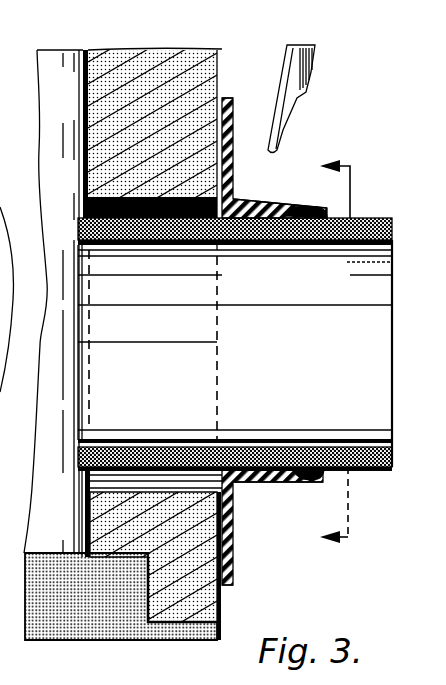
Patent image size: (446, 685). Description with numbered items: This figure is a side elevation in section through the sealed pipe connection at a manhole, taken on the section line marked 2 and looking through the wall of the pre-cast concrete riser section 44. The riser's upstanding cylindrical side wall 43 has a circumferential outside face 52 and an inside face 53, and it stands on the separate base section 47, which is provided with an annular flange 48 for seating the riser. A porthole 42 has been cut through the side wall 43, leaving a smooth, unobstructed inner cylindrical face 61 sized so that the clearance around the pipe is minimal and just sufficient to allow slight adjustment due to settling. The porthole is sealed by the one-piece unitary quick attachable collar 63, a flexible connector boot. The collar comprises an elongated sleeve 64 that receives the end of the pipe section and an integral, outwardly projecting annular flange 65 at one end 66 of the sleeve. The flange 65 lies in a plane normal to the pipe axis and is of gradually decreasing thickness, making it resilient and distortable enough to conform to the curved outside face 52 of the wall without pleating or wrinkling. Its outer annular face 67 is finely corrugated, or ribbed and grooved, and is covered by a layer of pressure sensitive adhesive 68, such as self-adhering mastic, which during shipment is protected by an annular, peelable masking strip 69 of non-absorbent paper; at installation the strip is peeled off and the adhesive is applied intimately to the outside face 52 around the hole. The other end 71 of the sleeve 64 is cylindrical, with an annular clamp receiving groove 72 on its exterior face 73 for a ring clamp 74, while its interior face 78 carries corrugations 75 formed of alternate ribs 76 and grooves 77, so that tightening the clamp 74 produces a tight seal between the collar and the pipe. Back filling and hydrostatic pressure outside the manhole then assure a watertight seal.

The section line of Fig. 2 is at (326, 350).
The porthole 42 is at (86, 176).
The side wall 43 is at (85, 100).
The riser section 44 is at (203, 641).
The base section 47 is at (78, 640).
The annular flange 48 is at (128, 640).
The outside face 52 is at (221, 96).
The inside face 53 is at (83, 77).
The inner cylindrical face 61 is at (85, 497).
The collar 63 is at (272, 531).
The sleeve 64 is at (265, 483).
The annular flange 65 is at (234, 566).
The one end 66 is at (235, 244).
The outer annular face 67 is at (193, 457).
The pressure sensitive adhesive layer 68 is at (235, 240).
The masking strip 69 is at (313, 90).
The other end 71 is at (325, 481).
The clamp receiving groove 72 is at (320, 212).
The exterior face 73 is at (265, 205).
The ring clamp 74 is at (316, 208).
The corrugations 75 is at (291, 244).
The ribs 76 is at (307, 245).
The frame edge 77 is at (328, 244).
The interior face 78 is at (247, 245).